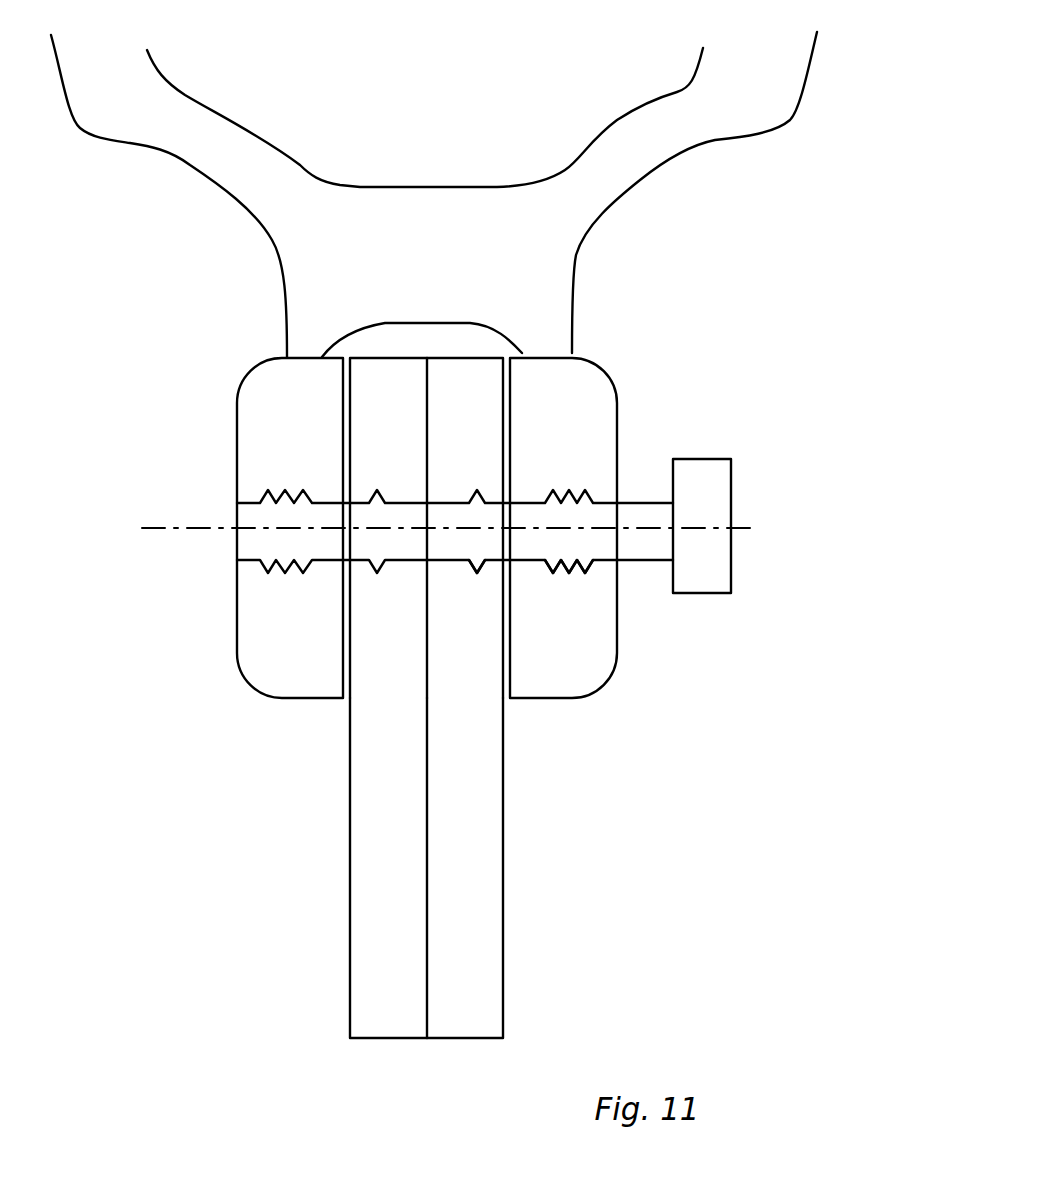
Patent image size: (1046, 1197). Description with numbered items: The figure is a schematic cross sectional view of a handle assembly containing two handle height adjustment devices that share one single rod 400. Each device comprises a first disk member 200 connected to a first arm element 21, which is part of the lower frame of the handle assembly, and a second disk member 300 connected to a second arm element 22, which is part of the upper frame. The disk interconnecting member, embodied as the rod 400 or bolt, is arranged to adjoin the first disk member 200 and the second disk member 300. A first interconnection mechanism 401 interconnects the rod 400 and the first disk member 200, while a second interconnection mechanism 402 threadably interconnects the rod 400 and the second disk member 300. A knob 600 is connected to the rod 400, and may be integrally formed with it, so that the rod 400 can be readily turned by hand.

The first arm element 21 is at (310, 912).
The second arm element 22 is at (434, 194).
The first disk member 200 is at (426, 528).
The second disk member 300 is at (427, 528).
The rod 400 is at (472, 573).
The first interconnection mechanism 401 is at (480, 590).
The second interconnection mechanism 402 is at (587, 575).
The knob 600 is at (695, 562).